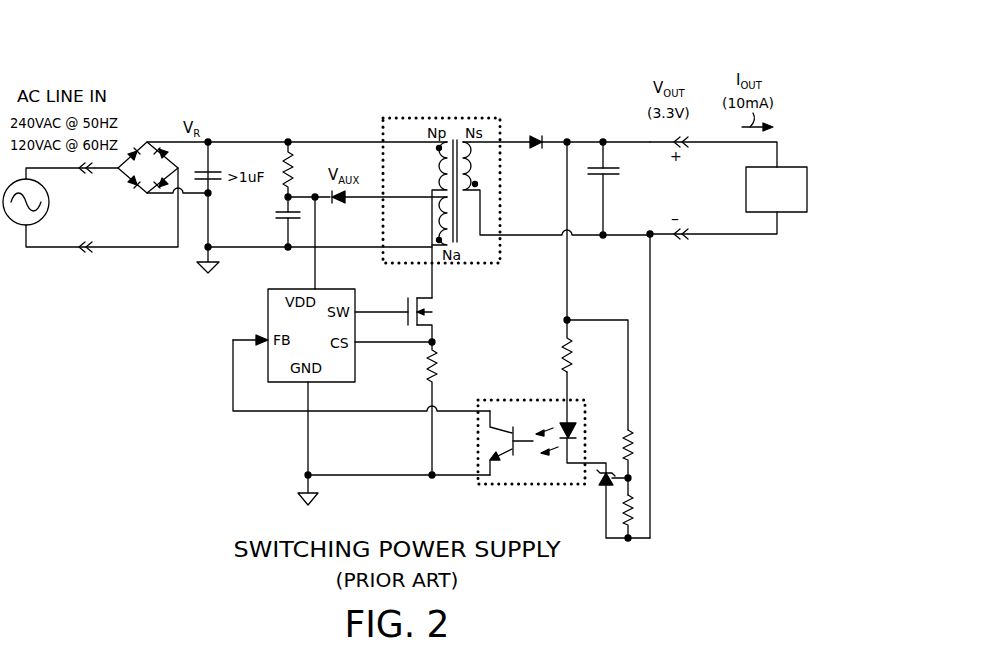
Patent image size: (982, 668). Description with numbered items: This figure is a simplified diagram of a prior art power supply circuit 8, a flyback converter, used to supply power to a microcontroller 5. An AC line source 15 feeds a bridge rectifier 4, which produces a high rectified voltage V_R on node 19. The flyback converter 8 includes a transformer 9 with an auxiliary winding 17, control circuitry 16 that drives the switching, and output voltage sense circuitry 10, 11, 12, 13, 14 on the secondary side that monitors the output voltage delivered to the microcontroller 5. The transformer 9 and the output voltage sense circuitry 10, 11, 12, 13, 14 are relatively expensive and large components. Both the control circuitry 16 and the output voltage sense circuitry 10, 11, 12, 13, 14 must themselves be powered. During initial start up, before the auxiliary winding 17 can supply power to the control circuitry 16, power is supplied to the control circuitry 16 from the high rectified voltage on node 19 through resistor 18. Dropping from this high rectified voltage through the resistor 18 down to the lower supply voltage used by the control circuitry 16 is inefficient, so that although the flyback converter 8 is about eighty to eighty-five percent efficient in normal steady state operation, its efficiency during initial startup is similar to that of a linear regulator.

The bridge rectifier 4 is at (152, 178).
The microcontroller 5 is at (793, 167).
The power supply circuit 8 is at (485, 51).
The transformer 9 is at (431, 118).
The output voltage sense circuitry 10 is at (492, 400).
The output voltage sense circuitry 11 is at (560, 350).
The output voltage sense circuitry 12 is at (600, 481).
The output voltage sense circuitry 13 is at (625, 430).
The output voltage sense circuitry 14 is at (633, 508).
The AC line source 15 is at (50, 203).
The control circuitry 16 is at (268, 294).
The auxiliary winding 17 is at (426, 221).
The resistor 18 is at (291, 161).
The node 19 is at (228, 140).